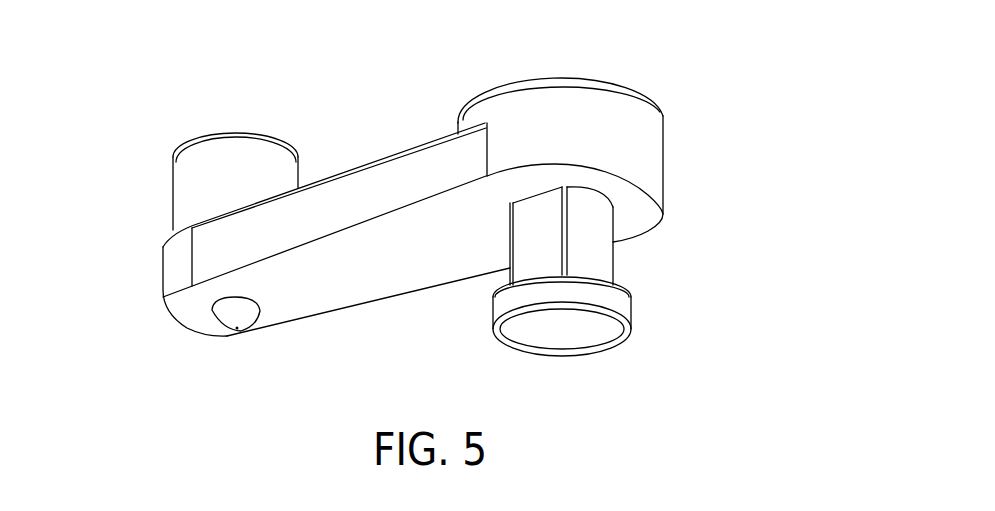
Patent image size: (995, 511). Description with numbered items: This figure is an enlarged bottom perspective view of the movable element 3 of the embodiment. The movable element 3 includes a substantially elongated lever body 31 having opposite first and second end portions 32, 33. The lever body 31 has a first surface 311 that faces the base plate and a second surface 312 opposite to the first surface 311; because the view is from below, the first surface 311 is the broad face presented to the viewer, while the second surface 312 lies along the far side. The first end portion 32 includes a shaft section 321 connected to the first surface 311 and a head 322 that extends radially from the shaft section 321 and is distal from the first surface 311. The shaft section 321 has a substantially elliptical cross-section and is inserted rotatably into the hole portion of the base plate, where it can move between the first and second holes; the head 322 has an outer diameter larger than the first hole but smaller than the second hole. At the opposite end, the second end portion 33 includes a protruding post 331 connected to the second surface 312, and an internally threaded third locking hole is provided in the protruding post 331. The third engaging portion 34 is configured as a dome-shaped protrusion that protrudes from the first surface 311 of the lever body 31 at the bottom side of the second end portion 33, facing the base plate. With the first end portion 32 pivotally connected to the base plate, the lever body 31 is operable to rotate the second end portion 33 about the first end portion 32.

The movable element 3 is at (670, 72).
The lever body 31 is at (413, 230).
The first surface 311 is at (397, 280).
The second surface 312 is at (377, 153).
The first end portion 32 is at (610, 279).
The shaft section 321 is at (598, 248).
The head 322 is at (602, 342).
The second end portion 33 is at (198, 139).
The protruding post 331 is at (190, 187).
The third engaging portion 34 is at (246, 313).